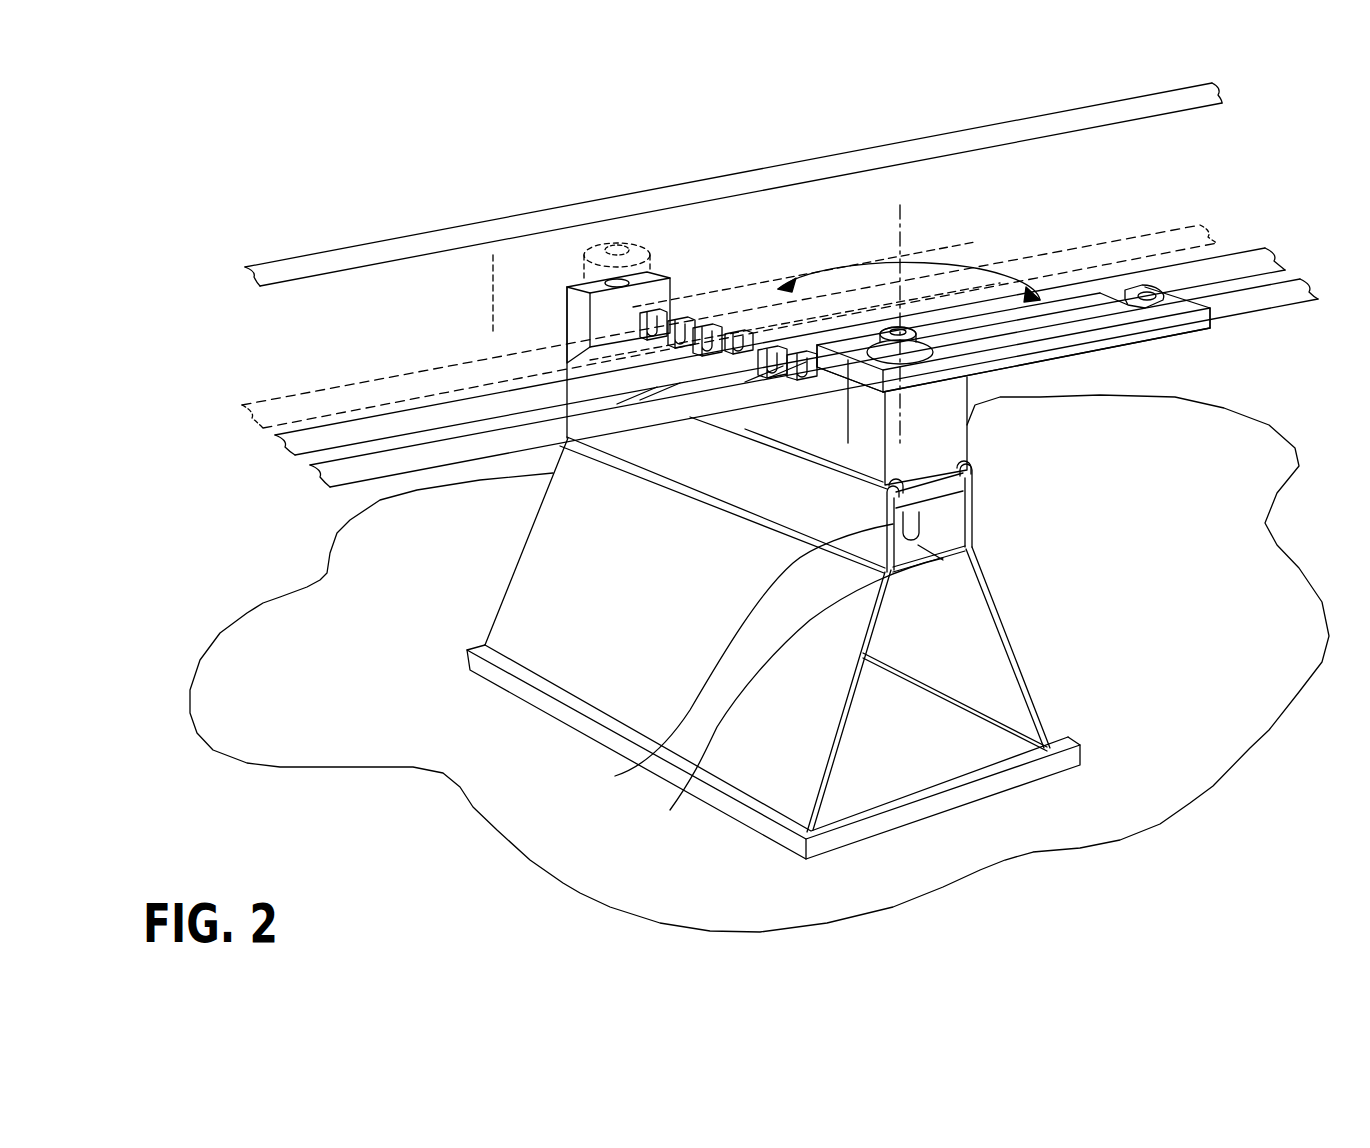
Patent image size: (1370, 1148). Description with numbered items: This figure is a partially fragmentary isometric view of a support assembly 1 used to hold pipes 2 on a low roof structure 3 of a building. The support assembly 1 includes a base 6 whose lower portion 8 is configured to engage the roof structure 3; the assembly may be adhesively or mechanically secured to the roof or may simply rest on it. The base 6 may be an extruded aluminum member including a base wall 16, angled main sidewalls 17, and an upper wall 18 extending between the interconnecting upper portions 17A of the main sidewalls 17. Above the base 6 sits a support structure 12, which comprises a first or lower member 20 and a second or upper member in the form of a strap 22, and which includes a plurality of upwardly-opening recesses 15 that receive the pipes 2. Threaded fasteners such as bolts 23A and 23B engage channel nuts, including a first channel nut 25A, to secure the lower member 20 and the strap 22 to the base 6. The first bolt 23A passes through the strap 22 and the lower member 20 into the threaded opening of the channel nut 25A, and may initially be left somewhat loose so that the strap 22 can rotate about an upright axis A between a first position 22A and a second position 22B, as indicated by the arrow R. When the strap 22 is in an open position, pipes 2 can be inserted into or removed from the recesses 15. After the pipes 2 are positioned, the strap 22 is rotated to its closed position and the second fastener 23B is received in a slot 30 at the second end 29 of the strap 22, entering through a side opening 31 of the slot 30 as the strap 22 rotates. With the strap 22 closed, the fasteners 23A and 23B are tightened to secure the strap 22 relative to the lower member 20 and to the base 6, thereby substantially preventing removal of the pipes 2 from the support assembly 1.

The support assembly 1 is at (1048, 524).
The pipes 2 is at (925, 152).
The low roof structure 3 is at (1196, 752).
The base 6 is at (1038, 685).
The lower portion 8 is at (967, 792).
The support structure 12 is at (958, 441).
The upwardly-opening recesses 15 is at (688, 316).
The base wall 16 is at (858, 783).
The angled main sidewalls 17 is at (1023, 652).
The interconnecting upper portions 17A is at (968, 546).
The upper wall 18 is at (965, 512).
The lower member 20 is at (968, 398).
The strap 22 is at (1188, 346).
The first position 22A is at (692, 280).
The second position 22B is at (1135, 353).
The bolt 23A is at (910, 335).
The bolt 23B is at (606, 244).
The first channel nut 25A is at (945, 487).
The second end 29 is at (1218, 330).
The slot 30 is at (1150, 300).
The side opening 31 is at (1100, 292).
The upright axis A is at (912, 312).
The arrow R is at (912, 272).